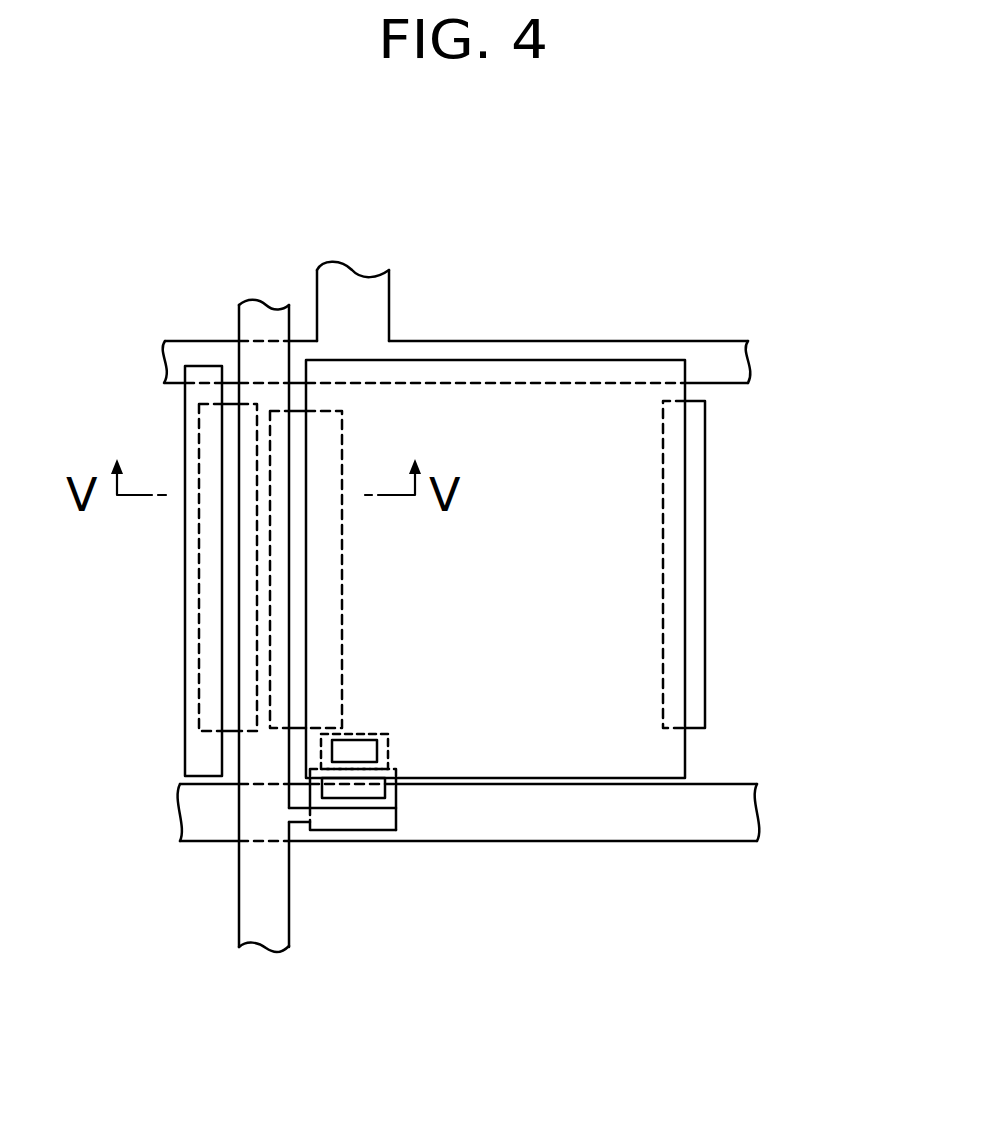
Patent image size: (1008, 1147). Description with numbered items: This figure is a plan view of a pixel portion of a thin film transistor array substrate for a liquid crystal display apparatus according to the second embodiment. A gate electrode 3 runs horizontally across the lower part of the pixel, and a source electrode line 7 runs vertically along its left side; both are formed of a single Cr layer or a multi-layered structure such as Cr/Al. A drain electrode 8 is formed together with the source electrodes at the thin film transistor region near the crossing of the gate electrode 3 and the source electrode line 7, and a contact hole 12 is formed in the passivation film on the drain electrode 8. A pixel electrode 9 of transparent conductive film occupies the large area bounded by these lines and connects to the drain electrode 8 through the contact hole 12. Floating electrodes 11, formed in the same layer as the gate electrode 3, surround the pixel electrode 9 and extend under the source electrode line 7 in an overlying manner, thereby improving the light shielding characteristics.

The gate electrode 3 is at (662, 825).
The source electrode line 7 is at (248, 870).
The drain electrode 8 is at (387, 790).
The pixel electrode 9 is at (619, 680).
The floating electrode 11 is at (337, 453).
The contact hole 12 is at (354, 747).